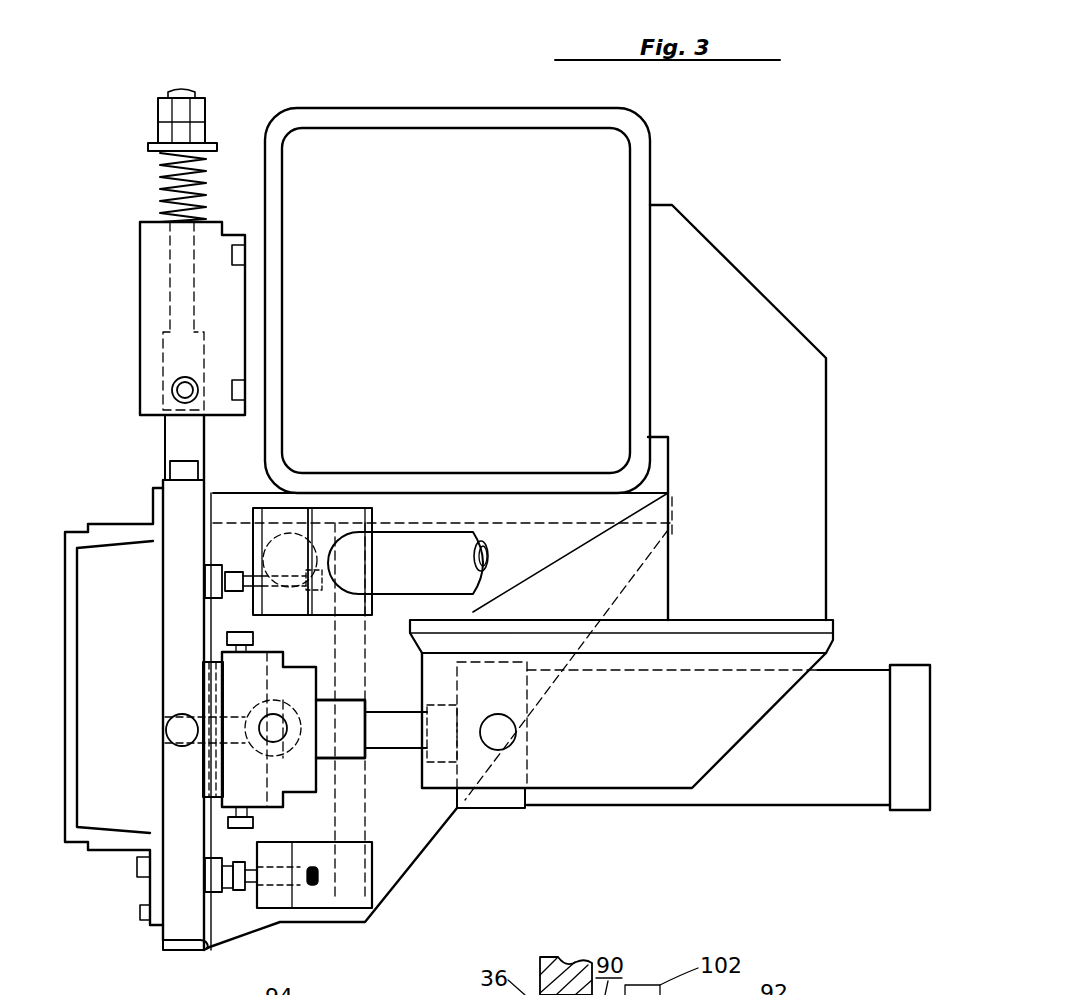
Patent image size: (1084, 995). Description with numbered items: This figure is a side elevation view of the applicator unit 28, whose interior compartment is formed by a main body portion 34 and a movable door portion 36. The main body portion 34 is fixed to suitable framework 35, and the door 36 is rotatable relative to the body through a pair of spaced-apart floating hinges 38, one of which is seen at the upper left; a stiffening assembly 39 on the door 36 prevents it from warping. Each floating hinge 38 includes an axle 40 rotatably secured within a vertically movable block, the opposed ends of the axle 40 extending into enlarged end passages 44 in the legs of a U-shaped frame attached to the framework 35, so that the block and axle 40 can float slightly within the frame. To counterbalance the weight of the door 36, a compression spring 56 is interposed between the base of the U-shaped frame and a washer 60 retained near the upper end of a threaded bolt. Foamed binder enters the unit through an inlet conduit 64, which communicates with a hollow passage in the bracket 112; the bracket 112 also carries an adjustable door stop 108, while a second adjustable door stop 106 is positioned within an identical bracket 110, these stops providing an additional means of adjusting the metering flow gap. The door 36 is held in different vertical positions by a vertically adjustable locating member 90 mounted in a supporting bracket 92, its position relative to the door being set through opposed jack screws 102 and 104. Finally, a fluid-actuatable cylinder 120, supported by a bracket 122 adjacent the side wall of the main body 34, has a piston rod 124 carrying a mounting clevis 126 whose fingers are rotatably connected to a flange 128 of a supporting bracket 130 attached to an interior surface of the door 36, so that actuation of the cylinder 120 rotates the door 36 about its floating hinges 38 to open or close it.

The applicator unit 28 is at (137, 500).
The main body portion 34 is at (262, 920).
The framework 35 is at (300, 118).
The door portion 36 is at (175, 625).
The floating hinge 38 is at (140, 235).
The stiffening assembly 39 is at (68, 612).
The axle 40 is at (172, 386).
The enlarged end passage 44 is at (170, 394).
The compression spring 56 is at (160, 186).
The washer 60 is at (150, 147).
The inlet conduit 64 is at (420, 555).
The locating member 90 is at (190, 745).
The supporting bracket 92 is at (290, 672).
The jack screw 102 is at (228, 637).
The jack screw 104 is at (255, 818).
The adjustable door stop 106 is at (245, 893).
The adjustable door stop 108 is at (246, 575).
The bracket 110 is at (325, 895).
The bracket 112 is at (270, 510).
The fluid-actuatable cylinder 120 is at (700, 793).
The bracket 122 is at (820, 640).
The piston rod 124 is at (388, 740).
The mounting clevis 126 is at (348, 710).
The flange 128 is at (250, 752).
The supporting bracket 130 is at (200, 783).